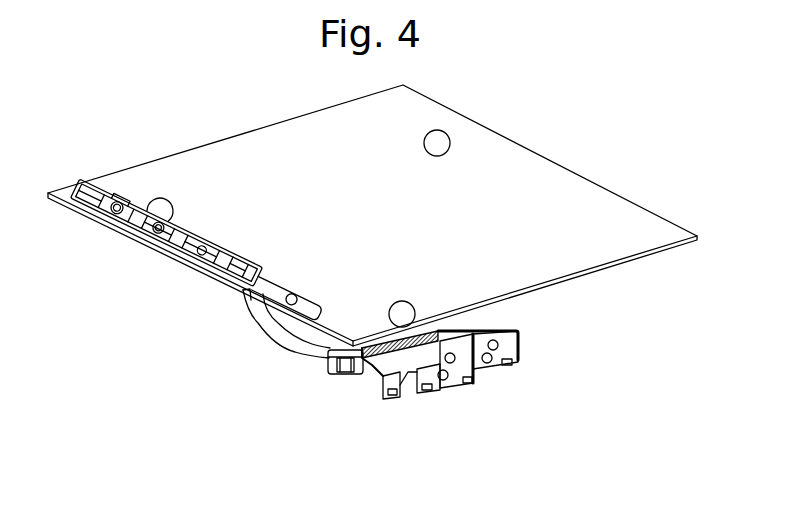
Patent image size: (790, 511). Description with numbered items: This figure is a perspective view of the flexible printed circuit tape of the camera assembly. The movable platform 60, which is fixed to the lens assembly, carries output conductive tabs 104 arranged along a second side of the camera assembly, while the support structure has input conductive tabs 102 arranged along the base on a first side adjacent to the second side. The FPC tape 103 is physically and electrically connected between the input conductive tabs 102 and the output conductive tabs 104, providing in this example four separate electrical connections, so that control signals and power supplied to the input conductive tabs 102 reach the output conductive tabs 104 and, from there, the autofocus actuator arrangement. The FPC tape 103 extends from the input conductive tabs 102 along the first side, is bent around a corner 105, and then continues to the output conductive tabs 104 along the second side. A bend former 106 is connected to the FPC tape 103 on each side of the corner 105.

The movable platform 60 is at (492, 157).
The input conductive tabs 102 is at (398, 402).
The flexible printed circuit tape 103 is at (288, 328).
The output conductive tabs 104 is at (117, 200).
The corner 105 is at (350, 381).
The bend former 106 is at (360, 383).